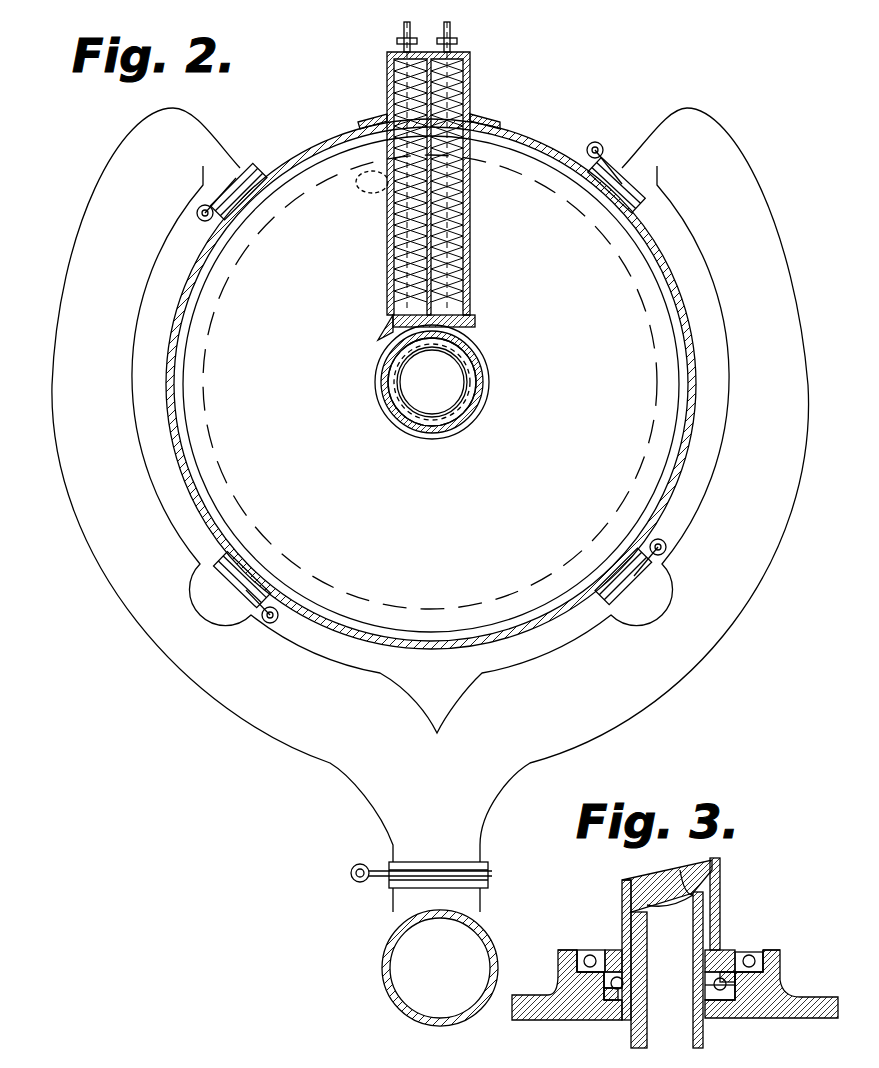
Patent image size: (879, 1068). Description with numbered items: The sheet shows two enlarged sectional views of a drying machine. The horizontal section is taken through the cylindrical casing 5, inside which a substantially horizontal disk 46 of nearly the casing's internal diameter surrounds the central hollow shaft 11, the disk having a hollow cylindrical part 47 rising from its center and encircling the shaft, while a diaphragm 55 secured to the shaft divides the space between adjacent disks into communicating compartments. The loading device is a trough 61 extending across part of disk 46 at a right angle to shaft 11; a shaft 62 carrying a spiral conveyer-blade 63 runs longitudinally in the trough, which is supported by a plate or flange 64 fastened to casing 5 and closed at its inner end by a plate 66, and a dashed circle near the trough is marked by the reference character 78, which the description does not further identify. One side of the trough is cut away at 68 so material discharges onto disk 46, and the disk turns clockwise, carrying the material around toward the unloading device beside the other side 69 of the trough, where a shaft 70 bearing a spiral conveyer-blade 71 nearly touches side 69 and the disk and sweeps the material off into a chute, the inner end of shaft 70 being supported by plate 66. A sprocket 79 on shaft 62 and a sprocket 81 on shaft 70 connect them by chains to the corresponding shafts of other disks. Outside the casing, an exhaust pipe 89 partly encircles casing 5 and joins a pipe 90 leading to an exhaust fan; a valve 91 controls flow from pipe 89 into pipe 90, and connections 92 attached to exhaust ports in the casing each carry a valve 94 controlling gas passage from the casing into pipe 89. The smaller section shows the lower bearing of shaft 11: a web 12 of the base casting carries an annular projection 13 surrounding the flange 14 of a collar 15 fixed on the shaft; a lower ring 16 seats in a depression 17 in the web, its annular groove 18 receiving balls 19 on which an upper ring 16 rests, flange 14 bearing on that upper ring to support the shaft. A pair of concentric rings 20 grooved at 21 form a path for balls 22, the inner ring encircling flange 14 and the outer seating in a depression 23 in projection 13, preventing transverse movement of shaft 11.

In FIG. 2, the casing 5 is at (690, 306).
In FIG. 2, the hollow shaft 11 is at (432, 416).
In FIG. 3, the hollow shaft 11 is at (688, 880).
In FIG. 3, the web 12 is at (560, 1020).
In FIG. 3, the annular projection 13 is at (560, 948).
In FIG. 3, the flange 14 is at (614, 948).
In FIG. 3, the collar 15 is at (634, 910).
In FIG. 3, the ring 16 is at (716, 978).
In FIG. 3, the depression 17 is at (606, 1004).
In FIG. 3, the annular groove 18 is at (614, 962).
In FIG. 3, the balls 19 is at (616, 1002).
In FIG. 3, the concentric rings 20 is at (577, 958).
In FIG. 3, the grooves 21 is at (600, 974).
In FIG. 3, the balls 22 is at (577, 962).
In FIG. 3, the depression 23 is at (580, 985).
In FIG. 2, the disk 46 is at (430, 382).
In FIG. 2, the hollow cylindrical part 47 is at (490, 383).
In FIG. 3, the hollow cylindrical part 47 is at (720, 860).
In FIG. 2, the diaphragm 55 is at (470, 404).
In FIG. 2, the trough 61 is at (470, 222).
In FIG. 2, the shaft 62 is at (450, 30).
In FIG. 2, the spiral conveyer-blade 63 is at (452, 270).
In FIG. 2, the plate or flange 64 is at (370, 118).
In FIG. 2, the plate 66 is at (472, 326).
In FIG. 2, the cut-away side 68 is at (460, 246).
In FIG. 2, the side 69 is at (400, 236).
In FIG. 2, the shaft 70 is at (404, 30).
In FIG. 2, the spiral conveyer-blade 71 is at (404, 252).
In FIG. 2, the opening 78 is at (392, 140).
In FIG. 2, the sprocket 79 is at (458, 44).
In FIG. 2, the sprocket 81 is at (398, 42).
In FIG. 2, the pipe 89 is at (430, 485).
In FIG. 2, the pipe 90 is at (384, 976).
In FIG. 2, the valve 91 is at (356, 866).
In FIG. 2, the connection 92 is at (240, 172).
In FIG. 2, the valve 94 is at (210, 218).